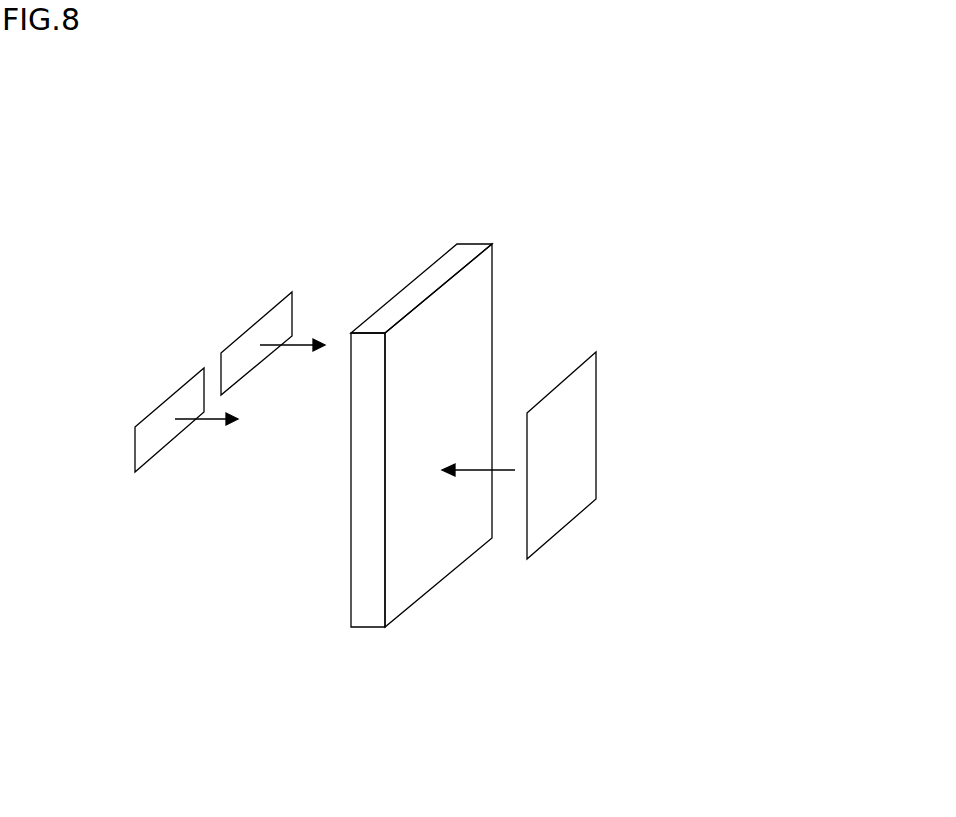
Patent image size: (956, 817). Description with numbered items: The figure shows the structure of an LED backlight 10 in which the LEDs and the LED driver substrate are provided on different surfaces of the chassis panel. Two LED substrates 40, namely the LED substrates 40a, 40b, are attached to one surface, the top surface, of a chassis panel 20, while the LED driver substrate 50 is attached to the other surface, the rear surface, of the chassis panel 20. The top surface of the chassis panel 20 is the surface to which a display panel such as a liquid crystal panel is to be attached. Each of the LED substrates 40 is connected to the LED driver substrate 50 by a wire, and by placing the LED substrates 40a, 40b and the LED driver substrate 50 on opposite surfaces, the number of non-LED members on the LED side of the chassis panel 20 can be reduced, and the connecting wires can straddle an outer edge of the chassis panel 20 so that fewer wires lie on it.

The LED backlight 10 is at (607, 183).
The chassis panel 20 is at (368, 627).
The LED substrates 40 is at (213, 241).
The LED substrate 40a is at (162, 403).
The LED substrate 40b is at (237, 337).
The LED driver substrate 50 is at (587, 436).